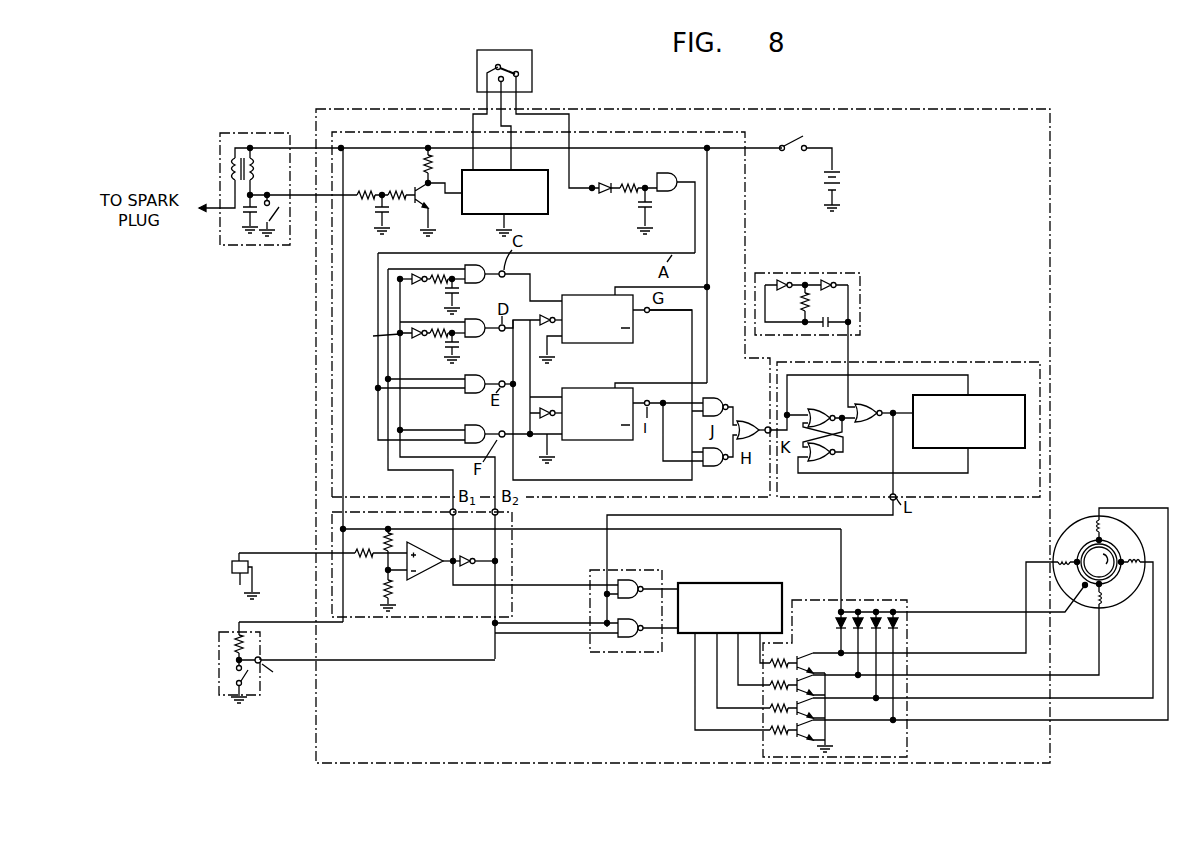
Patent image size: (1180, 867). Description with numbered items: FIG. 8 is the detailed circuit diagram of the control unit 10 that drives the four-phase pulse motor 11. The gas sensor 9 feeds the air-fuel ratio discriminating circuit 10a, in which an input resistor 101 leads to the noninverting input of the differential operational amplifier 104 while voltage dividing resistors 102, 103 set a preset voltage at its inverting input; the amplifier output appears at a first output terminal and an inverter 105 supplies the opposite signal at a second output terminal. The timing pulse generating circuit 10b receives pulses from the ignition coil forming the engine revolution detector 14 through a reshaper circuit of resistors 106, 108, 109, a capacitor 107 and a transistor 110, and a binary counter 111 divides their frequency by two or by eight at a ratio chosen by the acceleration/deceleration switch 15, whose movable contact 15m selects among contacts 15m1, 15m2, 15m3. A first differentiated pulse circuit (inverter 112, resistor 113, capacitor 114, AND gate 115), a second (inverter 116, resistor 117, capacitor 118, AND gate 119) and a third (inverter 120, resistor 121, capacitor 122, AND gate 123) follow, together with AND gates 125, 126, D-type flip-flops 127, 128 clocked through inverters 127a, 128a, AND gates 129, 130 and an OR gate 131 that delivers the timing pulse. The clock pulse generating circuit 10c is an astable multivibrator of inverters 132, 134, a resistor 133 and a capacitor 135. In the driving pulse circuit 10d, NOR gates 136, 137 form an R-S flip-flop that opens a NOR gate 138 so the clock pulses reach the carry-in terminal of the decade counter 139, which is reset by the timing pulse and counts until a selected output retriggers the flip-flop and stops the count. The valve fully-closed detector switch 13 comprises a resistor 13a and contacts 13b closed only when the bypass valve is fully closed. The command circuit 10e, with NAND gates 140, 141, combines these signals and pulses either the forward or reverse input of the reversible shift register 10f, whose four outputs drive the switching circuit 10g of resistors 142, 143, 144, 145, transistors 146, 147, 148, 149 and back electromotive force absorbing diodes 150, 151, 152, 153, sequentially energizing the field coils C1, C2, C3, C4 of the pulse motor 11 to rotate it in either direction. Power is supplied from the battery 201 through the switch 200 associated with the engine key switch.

The gas sensor 9 is at (230, 571).
The control unit 10 is at (904, 108).
The air-fuel ratio discriminating circuit 10a is at (392, 620).
The timing pulse generating circuit 10b is at (717, 131).
The clock pulse generating circuit 10c is at (803, 272).
The driving pulse circuit 10d is at (982, 361).
The command circuit 10e is at (590, 578).
The reversible shift register 10f is at (750, 583).
The switching circuit 10g is at (907, 740).
The pulse motor 11 is at (1092, 566).
The valve fully-closed detector switch 13 is at (350, 655).
The resistor 13a is at (250, 646).
The contacts 13b is at (246, 688).
The engine revolution detector 14 is at (250, 133).
The acceleration/deceleration switch 15 is at (532, 53).
The movable contact 15m is at (508, 63).
The fixed contact 15m1 is at (519, 74).
The fixed contact 15m2 is at (485, 67).
The fixed contact 15m3 is at (503, 81).
The input resistor 101 is at (360, 560).
The voltage dividing resistor 102 is at (386, 540).
The voltage dividing resistor 103 is at (392, 590).
The differential operational amplifier 104 is at (431, 555).
The inverter 105 is at (466, 556).
The resistor 106 is at (366, 193).
The capacitor 107 is at (386, 207).
The resistor 108 is at (398, 193).
The resistor 109 is at (431, 163).
The transistor 110 is at (430, 205).
The binary counter 111 is at (540, 215).
The inverter 112 is at (605, 193).
The resistor 113 is at (630, 186).
The capacitor 114 is at (651, 205).
The AND gate 115 is at (676, 202).
The inverter 116 is at (410, 277).
The resistor 117 is at (422, 287).
The capacitor 118 is at (458, 295).
The AND gate 119 is at (485, 264).
The inverter 120 is at (372, 340).
The resistor 121 is at (422, 342).
The capacitor 122 is at (455, 350).
The AND gate 123 is at (486, 330).
The AND gate 125 is at (463, 391).
The AND gate 126 is at (465, 443).
The D-type flip-flop 127 is at (587, 295).
The inverter 127a is at (548, 315).
The D-type flip-flop 128 is at (612, 388).
The inverter 128a is at (548, 408).
The AND gate 129 is at (716, 398).
The AND gate 130 is at (722, 466).
The OR gate 131 is at (748, 420).
The inverter 132 is at (781, 280).
The resistor 133 is at (800, 323).
The inverter 134 is at (830, 280).
The capacitor 135 is at (833, 317).
The NOR gate 136 is at (829, 413).
The NOR gate 137 is at (836, 454).
The NOR gate 138 is at (884, 401).
The decade counter 139 is at (1003, 395).
The NAND gate 140 is at (628, 580).
The NAND gate 141 is at (628, 637).
The resistor 142 is at (770, 666).
The resistor 143 is at (770, 688).
The resistor 144 is at (770, 711).
The resistor 145 is at (770, 734).
The transistor 146 is at (808, 655).
The transistor 147 is at (826, 690).
The transistor 148 is at (826, 712).
The transistor 149 is at (826, 735).
The back electromotive force absorbing diode 150 is at (838, 616).
The back electromotive force absorbing diode 151 is at (860, 612).
The back electromotive force absorbing diode 152 is at (874, 612).
The back electromotive force absorbing diode 153 is at (895, 614).
The switch 200 is at (805, 141).
The battery 201 is at (843, 181).
The field coil C1 is at (1058, 556).
The field coil C2 is at (1096, 604).
The field coil C3 is at (1140, 568).
The field coil C4 is at (1091, 526).